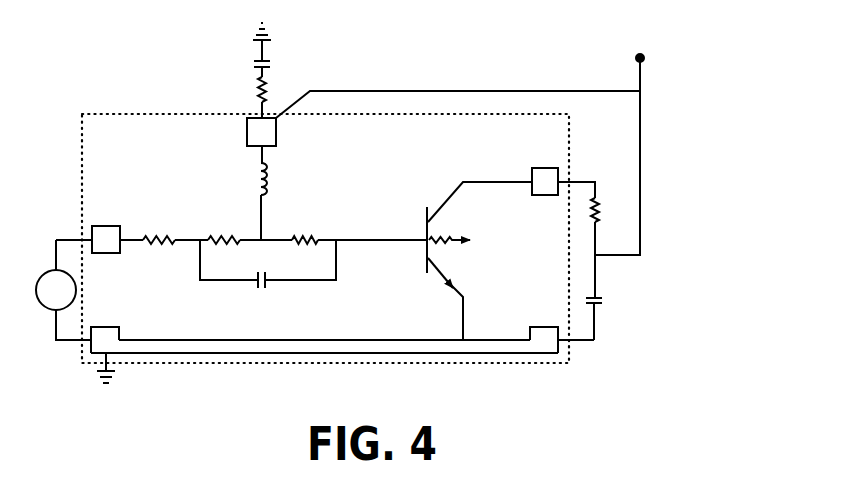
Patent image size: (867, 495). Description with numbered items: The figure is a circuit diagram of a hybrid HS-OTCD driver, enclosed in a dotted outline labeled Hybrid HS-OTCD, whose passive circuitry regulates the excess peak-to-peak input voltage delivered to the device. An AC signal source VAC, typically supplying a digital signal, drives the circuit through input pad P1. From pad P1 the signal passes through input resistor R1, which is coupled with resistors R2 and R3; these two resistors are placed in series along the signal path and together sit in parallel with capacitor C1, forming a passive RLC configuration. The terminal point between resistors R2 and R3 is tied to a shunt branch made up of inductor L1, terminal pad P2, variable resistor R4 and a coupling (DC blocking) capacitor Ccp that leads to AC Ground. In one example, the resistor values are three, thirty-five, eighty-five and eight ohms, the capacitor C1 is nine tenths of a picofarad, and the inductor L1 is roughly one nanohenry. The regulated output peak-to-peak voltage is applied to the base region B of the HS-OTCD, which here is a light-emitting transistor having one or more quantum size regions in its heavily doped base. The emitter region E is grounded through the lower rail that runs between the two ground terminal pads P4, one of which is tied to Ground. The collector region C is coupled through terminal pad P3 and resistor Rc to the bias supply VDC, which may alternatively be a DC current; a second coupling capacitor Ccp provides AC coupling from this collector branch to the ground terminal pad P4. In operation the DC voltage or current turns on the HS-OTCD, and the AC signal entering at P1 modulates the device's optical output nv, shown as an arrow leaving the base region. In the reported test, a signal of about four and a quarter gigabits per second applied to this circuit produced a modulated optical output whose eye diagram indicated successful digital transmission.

The hybrid HS-OTCD Hybrid is at (325, 238).
The element HS-OTCD is at (418, 254).
The pad P1 is at (106, 227).
The terminal pad P2 is at (277, 132).
The terminal pad P3 is at (544, 168).
The ground terminal pad P4 is at (324, 327).
The input resistor R1 is at (159, 226).
The resistor R2 is at (222, 226).
The resistor R3 is at (306, 226).
The variable resistor R4 is at (243, 92).
The resistor Rc is at (610, 210).
The capacitor C1 is at (268, 277).
The coupling (DC blocking) capacitor Ccp is at (427, 184).
The inductor L1 is at (279, 179).
The AC signal source VAC is at (56, 290).
The bias voltage VDC is at (669, 44).
The ground Ground is at (230, 207).
The base region B is at (404, 220).
The collector region C is at (439, 187).
The emitter region E is at (440, 292).
The optical output nv is at (464, 241).